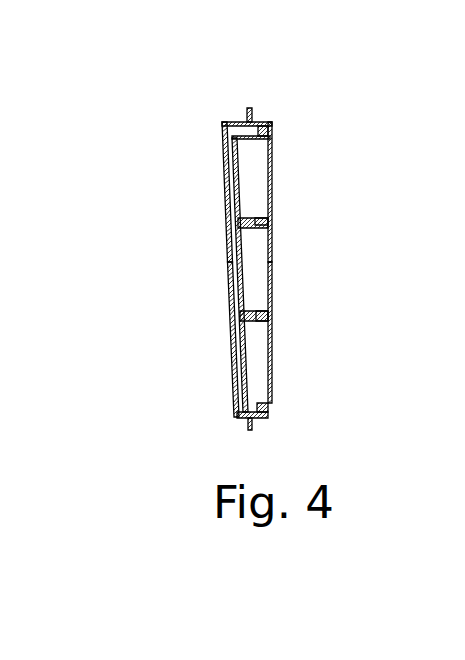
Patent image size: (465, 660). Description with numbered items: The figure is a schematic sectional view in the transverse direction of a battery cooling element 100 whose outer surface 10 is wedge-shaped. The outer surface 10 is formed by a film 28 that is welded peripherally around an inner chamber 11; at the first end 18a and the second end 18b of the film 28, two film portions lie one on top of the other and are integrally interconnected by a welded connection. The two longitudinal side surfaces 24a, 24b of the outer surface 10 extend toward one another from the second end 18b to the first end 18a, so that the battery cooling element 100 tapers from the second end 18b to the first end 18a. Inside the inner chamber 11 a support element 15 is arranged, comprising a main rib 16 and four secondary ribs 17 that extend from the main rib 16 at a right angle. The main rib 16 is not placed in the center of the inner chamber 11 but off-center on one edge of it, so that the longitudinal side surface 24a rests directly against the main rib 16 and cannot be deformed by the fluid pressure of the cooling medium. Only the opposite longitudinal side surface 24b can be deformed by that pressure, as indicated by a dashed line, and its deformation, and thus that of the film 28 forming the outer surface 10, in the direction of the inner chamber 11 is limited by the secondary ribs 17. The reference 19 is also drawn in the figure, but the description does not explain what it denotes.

The battery cooling element 100 is at (170, 107).
The outer surface 10 is at (344, 192).
The film 28 is at (272, 170).
The inner chamber 11 is at (258, 290).
The support element 15 is at (247, 206).
The main rib 16 is at (224, 205).
The secondary ribs 17 is at (270, 122).
The engagement web 19 is at (270, 137).
The first end 18a is at (248, 428).
The second end 18b is at (246, 113).
The longitudinal side surface 24a is at (232, 300).
The longitudinal side surface 24b is at (272, 260).